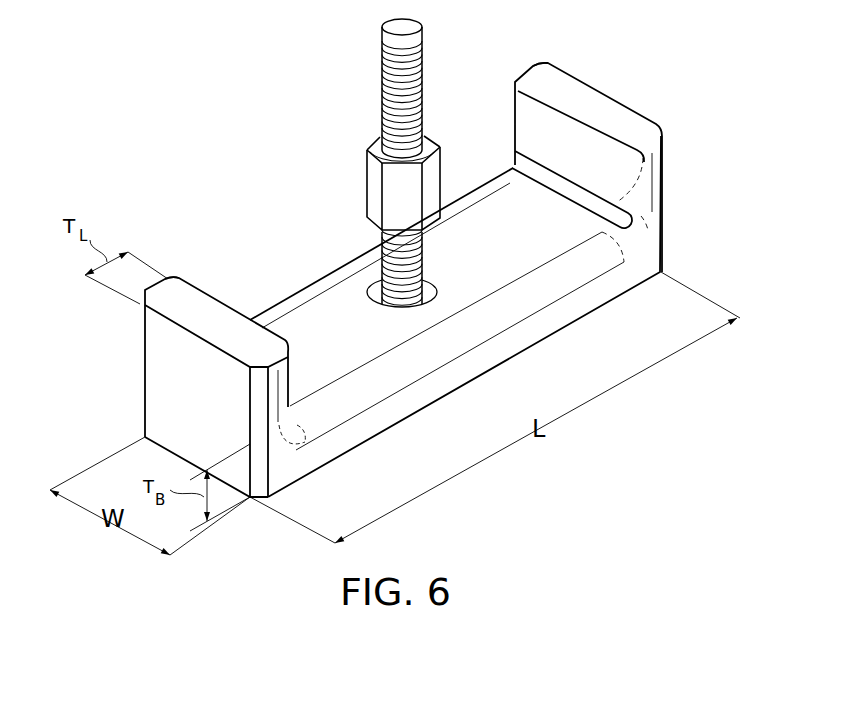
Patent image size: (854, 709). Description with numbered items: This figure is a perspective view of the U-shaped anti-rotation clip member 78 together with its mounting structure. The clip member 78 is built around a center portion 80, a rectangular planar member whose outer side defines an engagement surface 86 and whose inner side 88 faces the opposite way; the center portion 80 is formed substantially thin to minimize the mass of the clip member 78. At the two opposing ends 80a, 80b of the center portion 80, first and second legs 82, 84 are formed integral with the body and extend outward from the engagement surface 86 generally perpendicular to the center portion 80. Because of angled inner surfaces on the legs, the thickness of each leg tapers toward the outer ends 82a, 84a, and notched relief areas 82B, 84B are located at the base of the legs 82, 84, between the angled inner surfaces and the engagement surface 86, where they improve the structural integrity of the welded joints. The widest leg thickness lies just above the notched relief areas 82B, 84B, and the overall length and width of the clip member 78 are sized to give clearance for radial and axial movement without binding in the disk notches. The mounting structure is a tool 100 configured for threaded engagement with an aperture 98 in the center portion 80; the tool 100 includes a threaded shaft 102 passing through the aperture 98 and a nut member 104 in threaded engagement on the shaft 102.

The clip member 78 is at (587, 344).
The center portion 80 is at (433, 385).
The center portion end 80a is at (314, 430).
The center portion end 80b is at (626, 238).
The first leg 82 is at (181, 385).
The outer end of first leg 82a is at (194, 289).
The notched relief area 82B is at (287, 428).
The second leg 84 is at (653, 202).
The outer end of second leg 84a is at (568, 132).
The notched relief area 84B is at (515, 163).
The engagement surface 86 is at (325, 305).
The inner side 88 is at (403, 422).
The aperture 98 is at (436, 287).
The tool 100 is at (334, 182).
The threaded shaft 102 is at (382, 58).
The nut member 104 is at (367, 152).